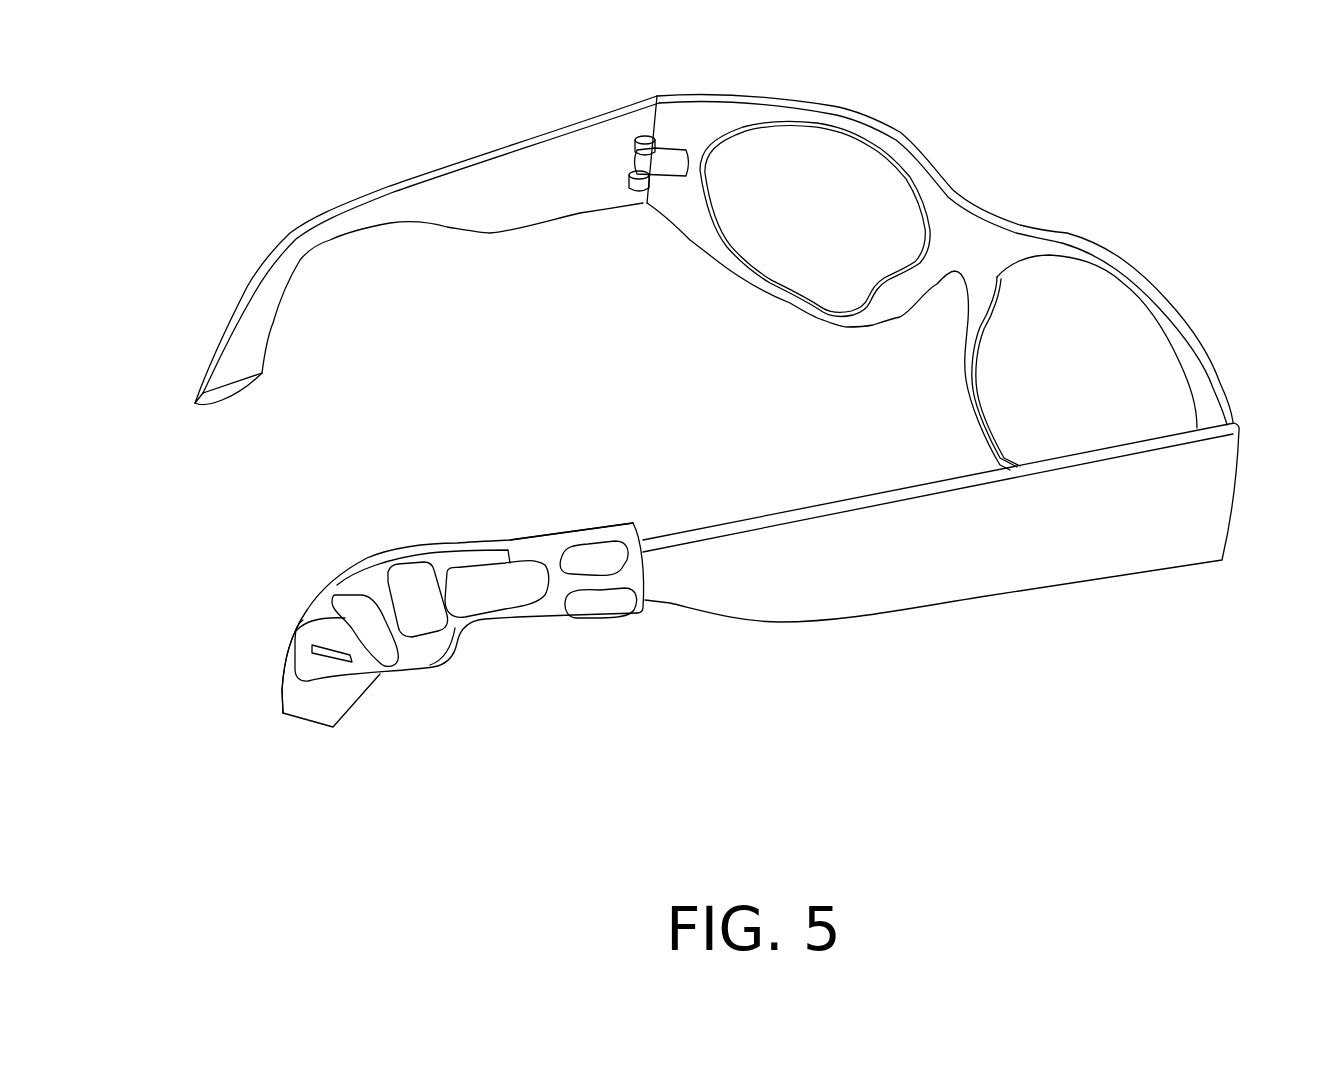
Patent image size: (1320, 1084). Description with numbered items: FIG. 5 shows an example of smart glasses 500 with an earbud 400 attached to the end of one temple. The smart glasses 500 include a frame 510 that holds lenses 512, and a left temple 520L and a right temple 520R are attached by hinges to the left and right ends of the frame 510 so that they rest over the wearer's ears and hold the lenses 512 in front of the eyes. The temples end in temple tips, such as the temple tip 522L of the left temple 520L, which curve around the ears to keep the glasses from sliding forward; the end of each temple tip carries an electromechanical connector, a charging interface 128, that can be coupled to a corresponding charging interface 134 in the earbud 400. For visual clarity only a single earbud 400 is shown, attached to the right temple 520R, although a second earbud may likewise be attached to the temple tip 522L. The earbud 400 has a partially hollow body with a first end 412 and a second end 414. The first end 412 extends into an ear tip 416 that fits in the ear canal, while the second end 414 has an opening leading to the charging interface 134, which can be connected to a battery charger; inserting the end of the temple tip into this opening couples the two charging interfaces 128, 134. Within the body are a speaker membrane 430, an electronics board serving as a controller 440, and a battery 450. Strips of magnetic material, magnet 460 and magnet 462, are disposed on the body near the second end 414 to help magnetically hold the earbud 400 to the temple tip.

The charging interface 128 is at (228, 400).
The charging interface 134 is at (352, 658).
The earbud 400 is at (302, 536).
The first end 412 is at (303, 717).
The second end 414 is at (632, 523).
The ear tip 416 is at (287, 650).
The speaker membrane 430 is at (342, 603).
The controller 440 is at (402, 580).
The battery 450 is at (487, 580).
The magnet 460 is at (590, 552).
The magnet 462 is at (593, 607).
The smart glasses 500 is at (806, 692).
The frame 510 is at (883, 123).
The lenses 512 is at (773, 173).
The temple 520L is at (463, 167).
The temple 520R is at (805, 518).
The temple tip 522L is at (275, 323).